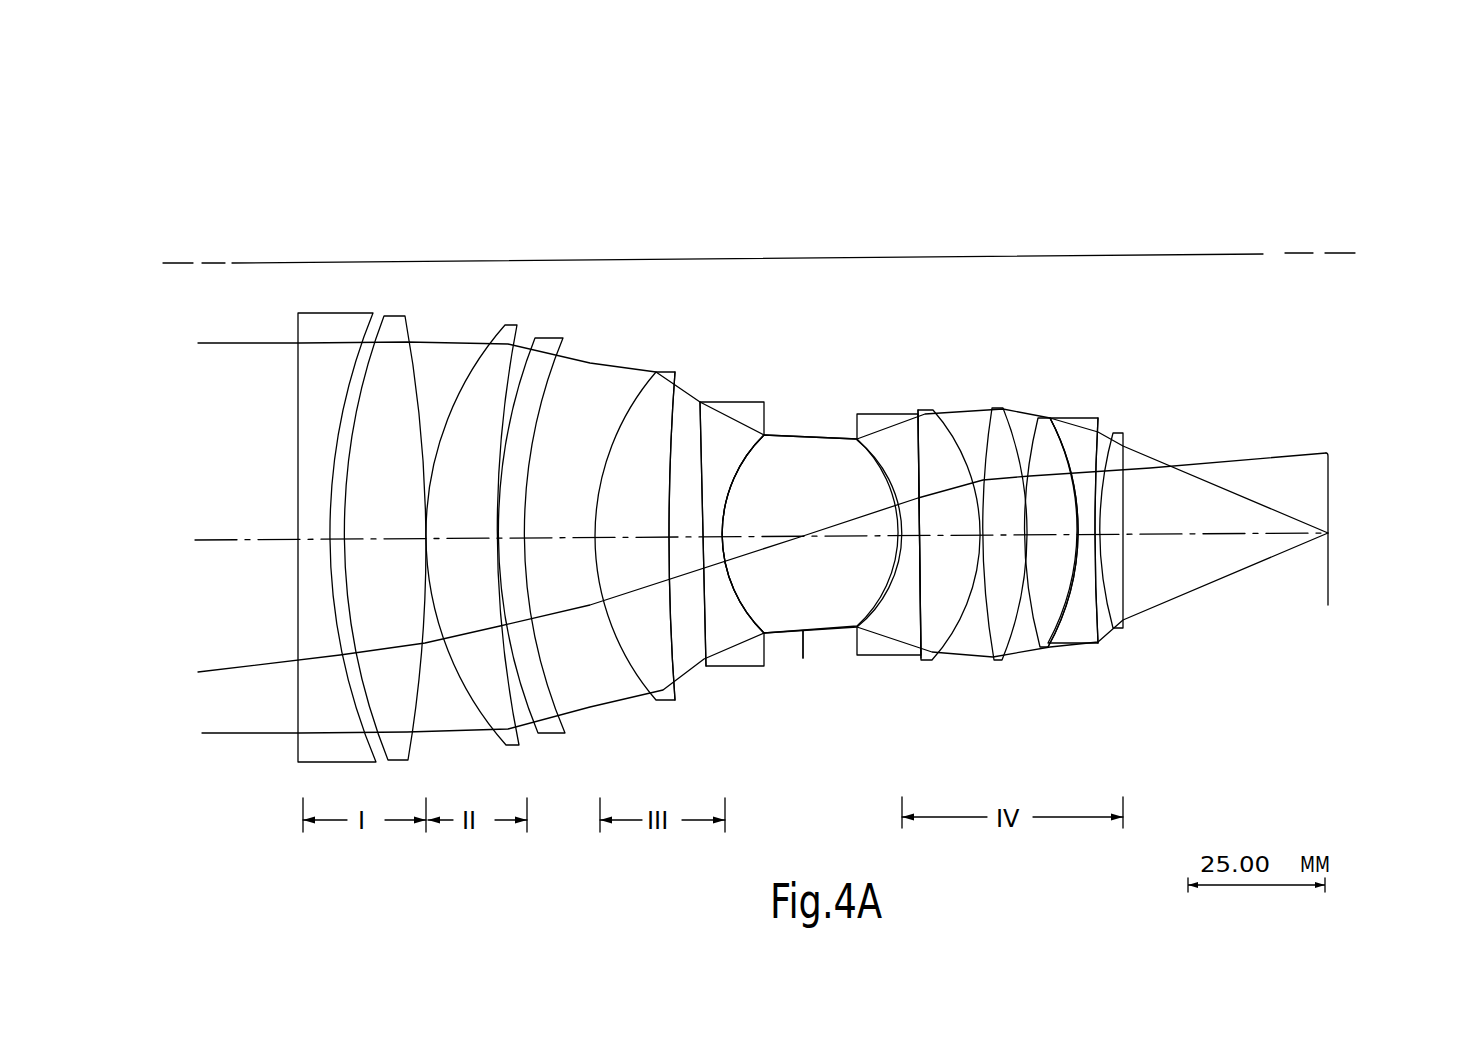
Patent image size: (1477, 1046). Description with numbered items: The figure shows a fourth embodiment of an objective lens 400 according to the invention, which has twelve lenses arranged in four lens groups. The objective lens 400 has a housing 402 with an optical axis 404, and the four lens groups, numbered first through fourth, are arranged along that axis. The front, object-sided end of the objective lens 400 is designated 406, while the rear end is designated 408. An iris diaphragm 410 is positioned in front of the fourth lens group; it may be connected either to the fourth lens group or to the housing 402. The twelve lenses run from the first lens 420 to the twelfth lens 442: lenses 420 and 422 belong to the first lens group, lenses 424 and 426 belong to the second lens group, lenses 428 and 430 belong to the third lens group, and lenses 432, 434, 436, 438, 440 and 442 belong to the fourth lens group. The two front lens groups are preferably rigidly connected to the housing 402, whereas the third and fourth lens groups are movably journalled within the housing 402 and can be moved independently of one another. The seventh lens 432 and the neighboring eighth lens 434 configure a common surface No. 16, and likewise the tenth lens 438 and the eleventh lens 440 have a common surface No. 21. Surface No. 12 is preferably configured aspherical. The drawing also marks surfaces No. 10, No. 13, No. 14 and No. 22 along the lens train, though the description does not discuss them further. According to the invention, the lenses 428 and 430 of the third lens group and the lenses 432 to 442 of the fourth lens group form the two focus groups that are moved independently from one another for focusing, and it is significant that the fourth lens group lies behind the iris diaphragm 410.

The objective lens 400 is at (1275, 170).
The housing 402 is at (1100, 253).
The optical axis 404 is at (1212, 533).
The front end 406 is at (180, 323).
The rear end 408 is at (1338, 337).
The iris diaphragm 410 is at (803, 427).
The first lens 420 is at (322, 327).
The second lens 422 is at (390, 325).
The third lens 424 is at (507, 333).
The fourth lens 426 is at (555, 342).
The fifth lens 428 is at (663, 700).
The sixth lens 430 is at (737, 668).
The seventh lens 432 is at (877, 650).
The eighth lens 434 is at (945, 655).
The ninth lens 436 is at (995, 660).
The tenth lens 438 is at (1040, 650).
The eleventh lens 440 is at (1078, 638).
The twelfth lens 442 is at (1127, 628).
The lens surface 10 is at (660, 358).
The surface No. 12 is at (700, 386).
The lens surface 13 is at (763, 385).
The lens surface 14 is at (802, 398).
The surface No. 16 is at (918, 395).
The surface No. 21 is at (1048, 406).
The lens surface 22 is at (1098, 406).